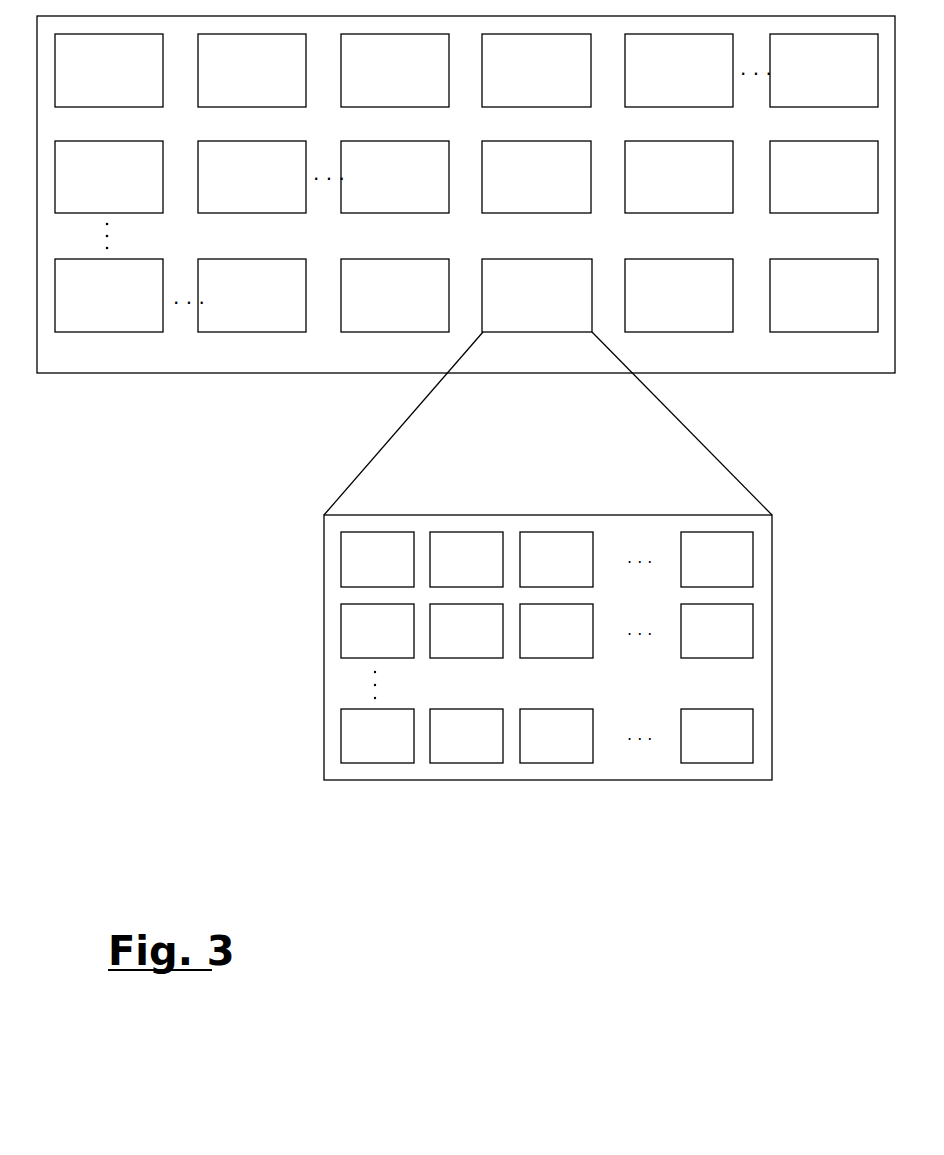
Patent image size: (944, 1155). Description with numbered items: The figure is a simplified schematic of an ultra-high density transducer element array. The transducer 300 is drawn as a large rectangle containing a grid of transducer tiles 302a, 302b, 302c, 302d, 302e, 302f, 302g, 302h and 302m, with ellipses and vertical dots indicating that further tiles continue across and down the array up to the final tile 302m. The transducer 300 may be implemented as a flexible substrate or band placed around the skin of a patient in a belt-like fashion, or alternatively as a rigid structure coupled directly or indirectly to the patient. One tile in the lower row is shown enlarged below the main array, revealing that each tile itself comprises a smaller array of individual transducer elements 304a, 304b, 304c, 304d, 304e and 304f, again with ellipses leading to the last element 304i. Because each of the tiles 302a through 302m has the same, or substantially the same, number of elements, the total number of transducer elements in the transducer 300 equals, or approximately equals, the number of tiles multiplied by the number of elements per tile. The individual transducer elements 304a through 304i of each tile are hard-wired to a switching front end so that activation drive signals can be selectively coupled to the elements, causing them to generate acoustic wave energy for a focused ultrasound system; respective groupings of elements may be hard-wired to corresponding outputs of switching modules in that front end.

The transducer 300 is at (100, 365).
The transducer tile 302a is at (109, 70).
The transducer tile 302b is at (252, 70).
The transducer tile 302c is at (395, 70).
The transducer tile 302d is at (536, 70).
The transducer tile 302e is at (679, 70).
The transducer tile 302f is at (109, 177).
The transducer tile 302g is at (252, 177).
The transducer tile 302h is at (109, 295).
The transducer tile 302m is at (824, 295).
The transducer element 304a is at (377, 559).
The transducer element 304b is at (466, 559).
The transducer element 304c is at (556, 559).
The transducer element 304d is at (377, 631).
The transducer element 304e is at (466, 631).
The transducer element 304f is at (377, 736).
The transducer element 304i is at (717, 736).